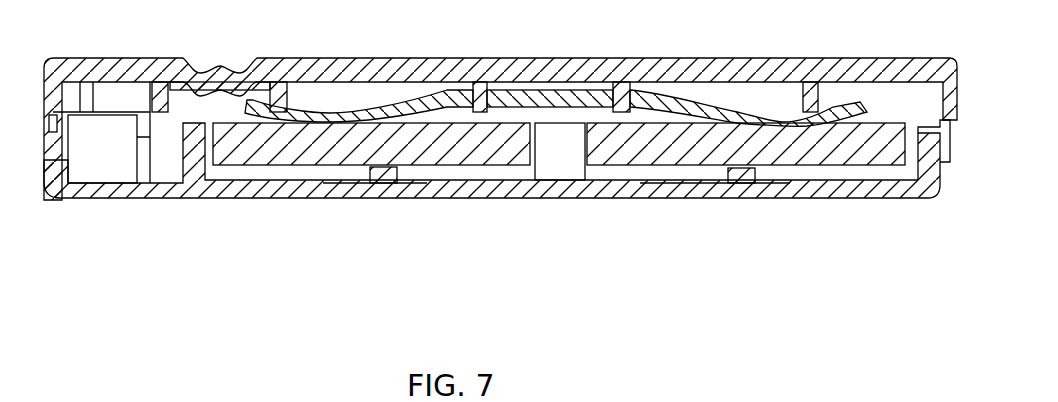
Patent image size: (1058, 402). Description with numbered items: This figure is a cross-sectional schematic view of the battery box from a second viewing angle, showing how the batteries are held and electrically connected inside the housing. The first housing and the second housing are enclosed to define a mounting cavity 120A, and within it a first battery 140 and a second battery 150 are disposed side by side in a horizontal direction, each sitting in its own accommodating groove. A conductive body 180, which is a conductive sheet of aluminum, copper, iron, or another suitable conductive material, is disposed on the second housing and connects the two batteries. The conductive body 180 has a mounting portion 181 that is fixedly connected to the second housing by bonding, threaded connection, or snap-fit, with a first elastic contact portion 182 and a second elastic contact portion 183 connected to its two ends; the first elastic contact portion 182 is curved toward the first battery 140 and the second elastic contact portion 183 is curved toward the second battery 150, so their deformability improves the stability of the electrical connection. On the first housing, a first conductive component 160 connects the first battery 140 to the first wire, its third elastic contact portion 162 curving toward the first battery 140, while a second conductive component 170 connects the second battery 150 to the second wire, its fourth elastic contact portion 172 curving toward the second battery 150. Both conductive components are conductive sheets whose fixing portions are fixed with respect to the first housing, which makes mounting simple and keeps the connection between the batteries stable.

The mounting cavity 120A is at (789, 93).
The first battery 140 is at (873, 160).
The second battery 150 is at (467, 150).
The first conductive component 160 is at (715, 237).
The third elastic contact portion 162 is at (747, 186).
The second conductive component 170 is at (375, 238).
The fourth elastic contact portion 172 is at (383, 185).
The conductive body 180 is at (556, 72).
The mounting portion 181 is at (544, 90).
The first elastic contact portion 182 is at (743, 112).
The second elastic contact portion 183 is at (366, 113).